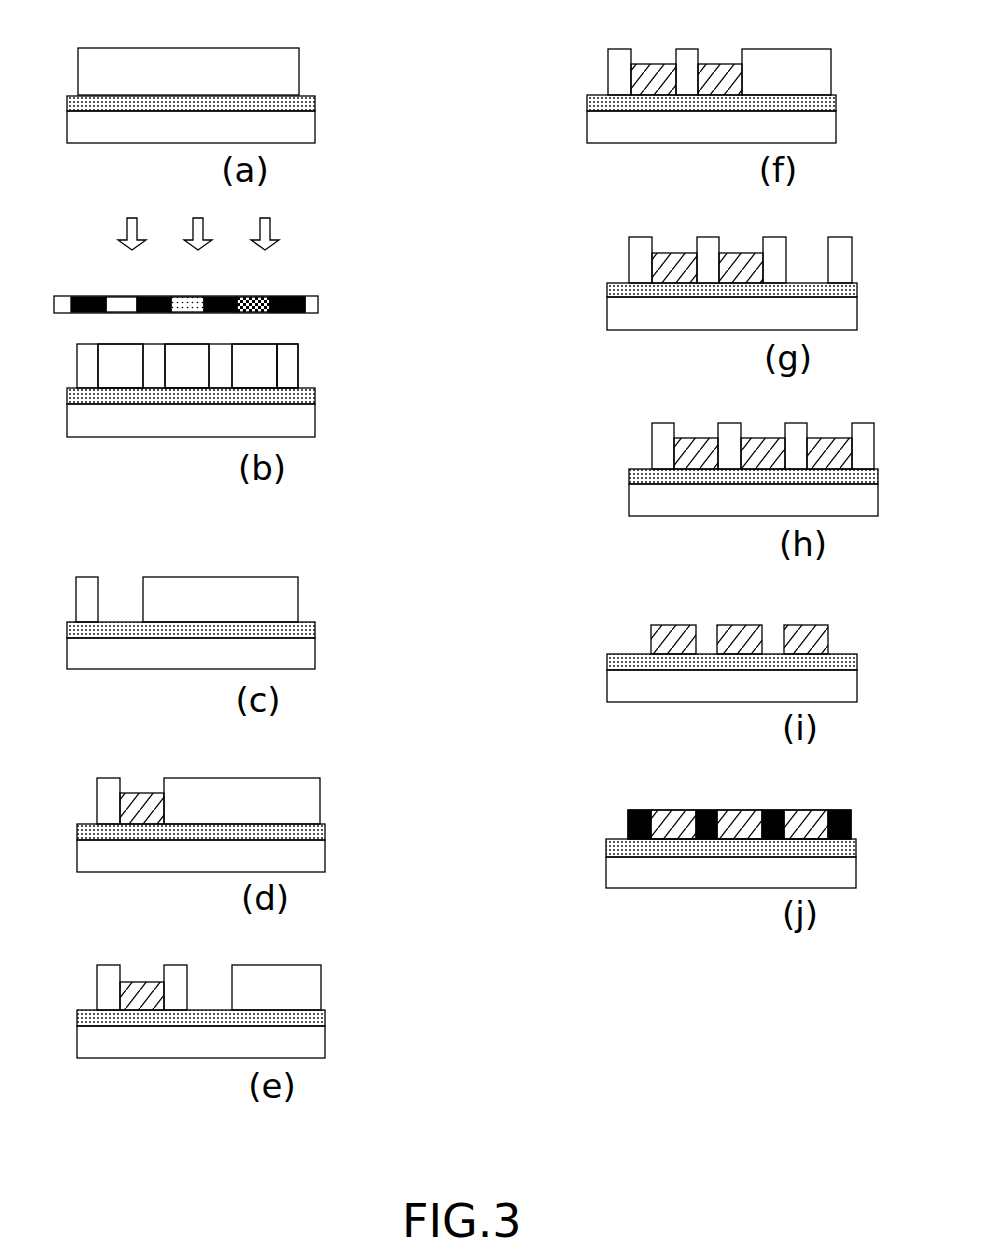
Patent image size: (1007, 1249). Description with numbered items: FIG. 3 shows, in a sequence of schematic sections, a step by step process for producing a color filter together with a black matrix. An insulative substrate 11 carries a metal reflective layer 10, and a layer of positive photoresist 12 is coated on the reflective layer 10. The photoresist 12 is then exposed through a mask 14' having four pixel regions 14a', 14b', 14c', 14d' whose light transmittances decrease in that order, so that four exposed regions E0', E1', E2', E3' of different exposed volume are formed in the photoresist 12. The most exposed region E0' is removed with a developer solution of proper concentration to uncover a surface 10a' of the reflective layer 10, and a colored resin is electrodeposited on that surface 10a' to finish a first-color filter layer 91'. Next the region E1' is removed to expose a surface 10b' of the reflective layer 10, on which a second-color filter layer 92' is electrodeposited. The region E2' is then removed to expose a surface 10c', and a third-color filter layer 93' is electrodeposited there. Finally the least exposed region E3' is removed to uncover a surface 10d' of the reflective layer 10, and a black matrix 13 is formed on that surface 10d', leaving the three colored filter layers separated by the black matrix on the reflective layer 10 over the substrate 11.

The positive photoresist layer 12 is at (299, 56).
The metal reflective layer 10 is at (315, 102).
The insulative substrate 11 is at (315, 128).
The mask 14' is at (216, 302).
The pixel region 14a' is at (134, 286).
The pixel region 14b' is at (196, 286).
The pixel region 14c' is at (263, 286).
The pixel region 14d' is at (304, 286).
The exposed region E0' is at (120, 366).
The exposed region E1' is at (187, 366).
The exposed region E2' is at (254, 366).
The exposed region E3' is at (294, 366).
The exposed surface of reflective layer 10a' is at (191, 584).
The first-color filter layer 91' is at (144, 782).
The exposed surface of reflective layer 10b' is at (201, 976).
The second-color filter layer 92' is at (725, 47).
The exposed surface of reflective layer 10c' is at (732, 246).
The third-color filter layer 93' is at (839, 424).
The exposed surface of reflective layer 10d' is at (738, 629).
The black matrix 13 is at (843, 810).